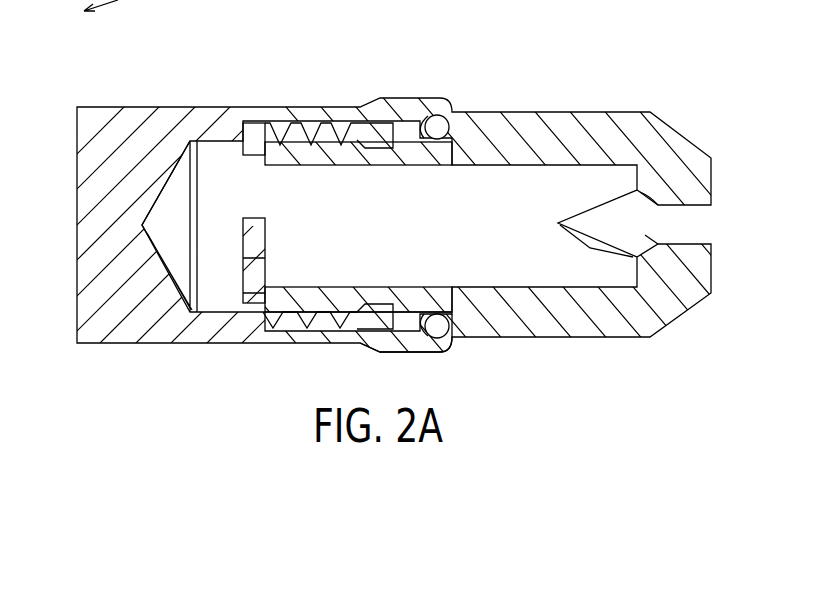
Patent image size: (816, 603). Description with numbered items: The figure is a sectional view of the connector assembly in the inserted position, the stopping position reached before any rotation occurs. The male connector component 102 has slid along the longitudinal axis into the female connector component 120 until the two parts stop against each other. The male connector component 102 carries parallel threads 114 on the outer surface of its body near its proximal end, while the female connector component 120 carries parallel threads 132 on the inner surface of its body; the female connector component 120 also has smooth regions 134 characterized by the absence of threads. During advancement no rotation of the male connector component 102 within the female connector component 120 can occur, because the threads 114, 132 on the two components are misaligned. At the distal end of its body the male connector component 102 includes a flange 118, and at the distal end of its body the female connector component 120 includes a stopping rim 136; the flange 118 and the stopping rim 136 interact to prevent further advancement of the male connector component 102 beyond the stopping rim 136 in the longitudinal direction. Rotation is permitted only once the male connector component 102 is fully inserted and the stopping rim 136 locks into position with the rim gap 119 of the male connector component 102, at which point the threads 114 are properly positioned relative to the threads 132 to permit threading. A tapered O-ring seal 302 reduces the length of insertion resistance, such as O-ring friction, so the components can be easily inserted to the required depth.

The male connector component 102 is at (487, 130).
The female connector component 120 is at (253, 122).
The threads 132 is at (288, 127).
The threads 114 is at (313, 128).
The smooth regions 134 is at (265, 336).
The rim gap 119 is at (379, 296).
The stopping rim 136 is at (366, 342).
The flange 118 is at (408, 340).
The tapered O-ring seal 302 is at (448, 338).